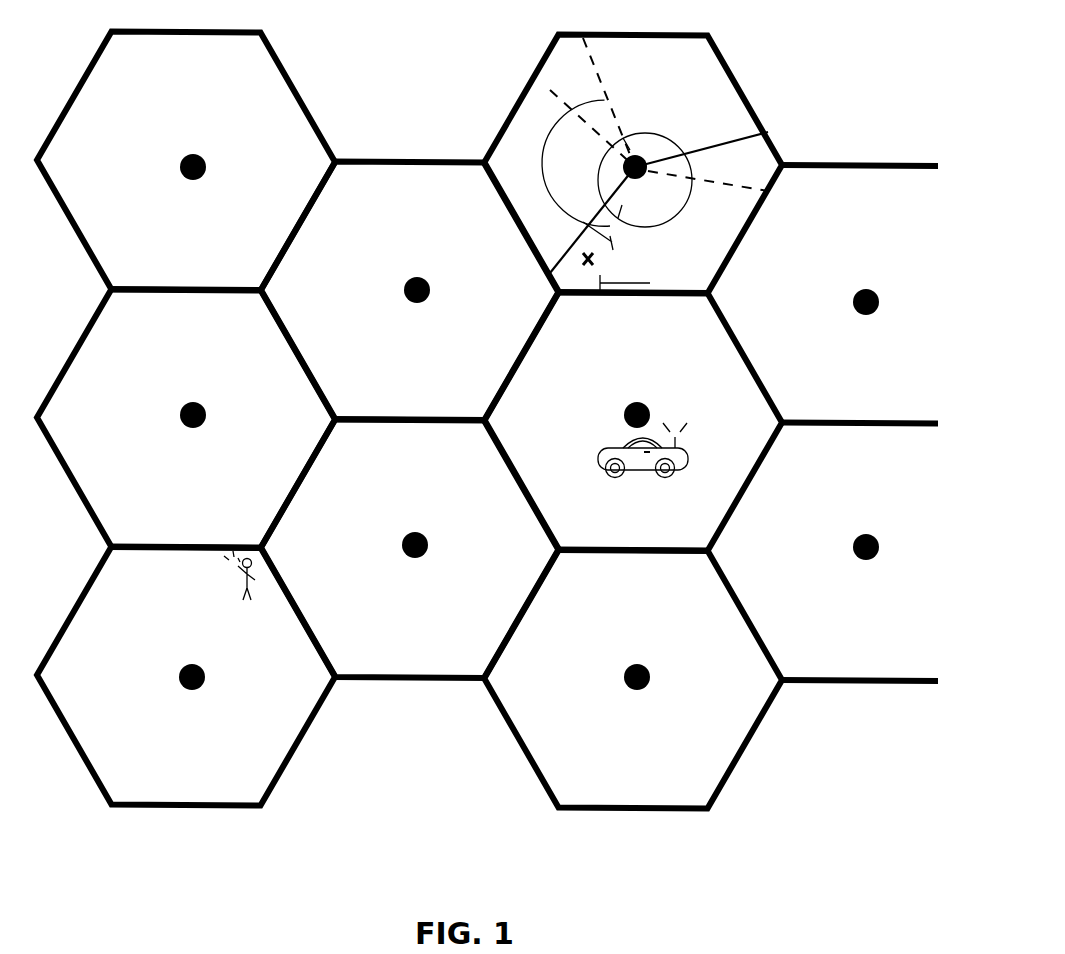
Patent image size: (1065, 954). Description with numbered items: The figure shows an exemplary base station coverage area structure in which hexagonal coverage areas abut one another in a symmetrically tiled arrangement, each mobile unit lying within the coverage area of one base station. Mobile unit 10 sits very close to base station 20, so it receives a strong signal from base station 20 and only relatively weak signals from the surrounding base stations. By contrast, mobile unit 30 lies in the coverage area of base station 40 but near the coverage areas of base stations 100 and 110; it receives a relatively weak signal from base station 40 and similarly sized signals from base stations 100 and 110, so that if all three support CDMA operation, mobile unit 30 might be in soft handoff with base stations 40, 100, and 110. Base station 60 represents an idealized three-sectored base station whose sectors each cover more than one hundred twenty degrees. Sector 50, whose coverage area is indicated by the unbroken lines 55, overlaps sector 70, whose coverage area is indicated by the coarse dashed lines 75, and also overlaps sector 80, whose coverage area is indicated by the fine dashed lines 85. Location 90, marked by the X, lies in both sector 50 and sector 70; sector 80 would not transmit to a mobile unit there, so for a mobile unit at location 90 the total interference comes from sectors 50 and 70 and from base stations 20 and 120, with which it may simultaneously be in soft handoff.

The mobile unit 10 is at (625, 447).
The base station 20 is at (643, 402).
The mobile unit 30 is at (247, 600).
The base station 40 is at (190, 688).
The sector 50 is at (677, 212).
The unbroken lines 55 is at (742, 139).
The base station 60 is at (622, 166).
The sector 70 is at (548, 153).
The coarse dashed lines 75 is at (603, 86).
The sector 80 is at (683, 130).
The fine dashed lines 85 is at (546, 88).
The location 90 is at (596, 262).
The base station 100 is at (207, 413).
The base station 110 is at (424, 545).
The base station 120 is at (425, 290).